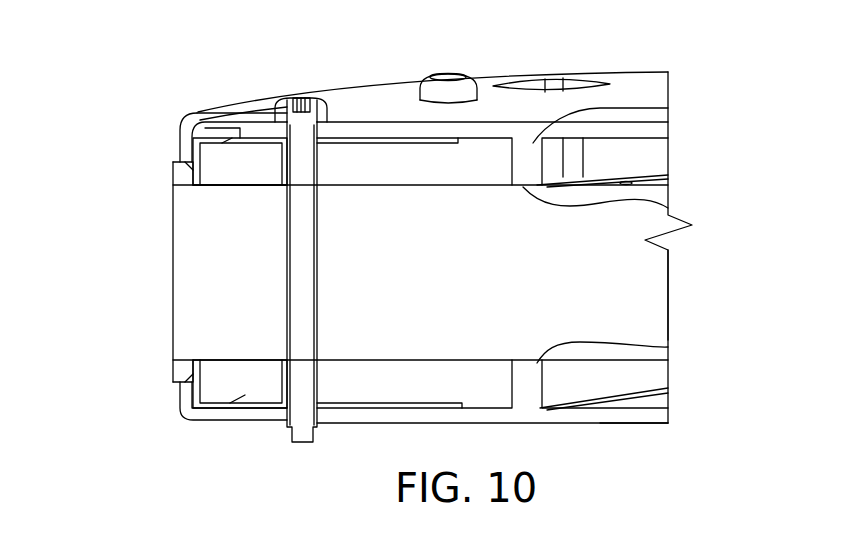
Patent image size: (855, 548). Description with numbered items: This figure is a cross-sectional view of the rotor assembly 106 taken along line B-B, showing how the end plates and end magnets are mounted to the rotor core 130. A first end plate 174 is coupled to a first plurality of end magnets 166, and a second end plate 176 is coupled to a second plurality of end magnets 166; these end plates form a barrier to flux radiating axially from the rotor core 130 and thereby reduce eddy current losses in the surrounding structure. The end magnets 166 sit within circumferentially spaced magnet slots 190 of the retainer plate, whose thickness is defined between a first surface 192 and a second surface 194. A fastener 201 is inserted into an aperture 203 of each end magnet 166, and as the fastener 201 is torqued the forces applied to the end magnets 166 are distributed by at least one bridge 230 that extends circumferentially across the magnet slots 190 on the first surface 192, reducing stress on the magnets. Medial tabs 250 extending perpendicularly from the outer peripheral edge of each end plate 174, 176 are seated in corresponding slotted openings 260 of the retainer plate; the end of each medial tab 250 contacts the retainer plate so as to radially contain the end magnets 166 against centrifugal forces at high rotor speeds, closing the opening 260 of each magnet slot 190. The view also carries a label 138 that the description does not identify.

The rotor assembly 106 is at (166, 108).
The medial tab 250 is at (178, 136).
The bridge 230 is at (222, 135).
The end magnets 166 is at (208, 152).
The slotted opening 260 is at (170, 178).
The rotor core 130 is at (163, 243).
The aperture 203 is at (272, 125).
The fastener 201 is at (313, 100).
The magnet slot 190 is at (452, 128).
The first surface 192 is at (530, 143).
The first end plate 174 is at (657, 130).
The second surface 194 is at (668, 208).
The body 138 is at (640, 268).
The second end plate 176 is at (660, 418).